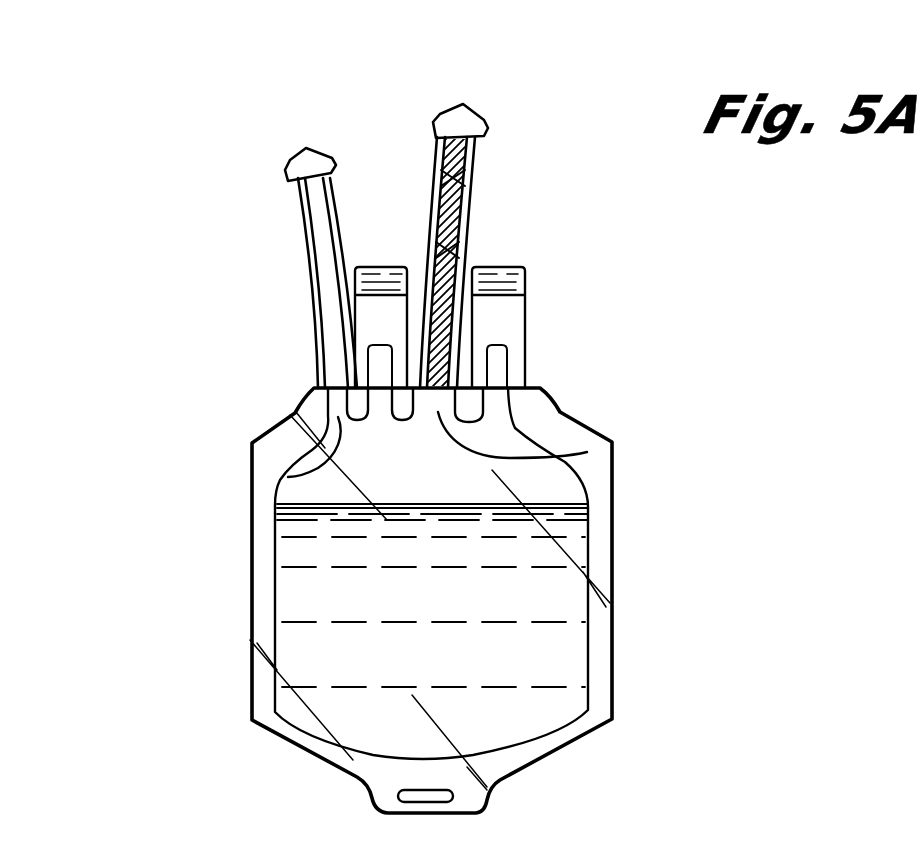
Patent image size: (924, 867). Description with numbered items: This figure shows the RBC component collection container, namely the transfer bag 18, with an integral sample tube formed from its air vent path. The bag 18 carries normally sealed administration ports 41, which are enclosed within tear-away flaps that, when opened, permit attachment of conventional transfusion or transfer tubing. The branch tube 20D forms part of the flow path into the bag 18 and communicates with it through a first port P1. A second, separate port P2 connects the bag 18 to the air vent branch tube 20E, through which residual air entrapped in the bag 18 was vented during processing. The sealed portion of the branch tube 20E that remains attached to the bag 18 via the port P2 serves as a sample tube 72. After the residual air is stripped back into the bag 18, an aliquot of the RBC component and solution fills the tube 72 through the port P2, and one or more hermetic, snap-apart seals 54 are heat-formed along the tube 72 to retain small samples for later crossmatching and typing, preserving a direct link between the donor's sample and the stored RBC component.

The transfer bag 18 is at (607, 545).
The branch tube 20D is at (313, 242).
The air vent branch tube 20E is at (453, 332).
The administration port 41 is at (357, 280).
The snap-apart seal 54 is at (290, 160).
The sample tube 72 is at (500, 143).
The first port P1 is at (193, 470).
The second port P2 is at (587, 452).